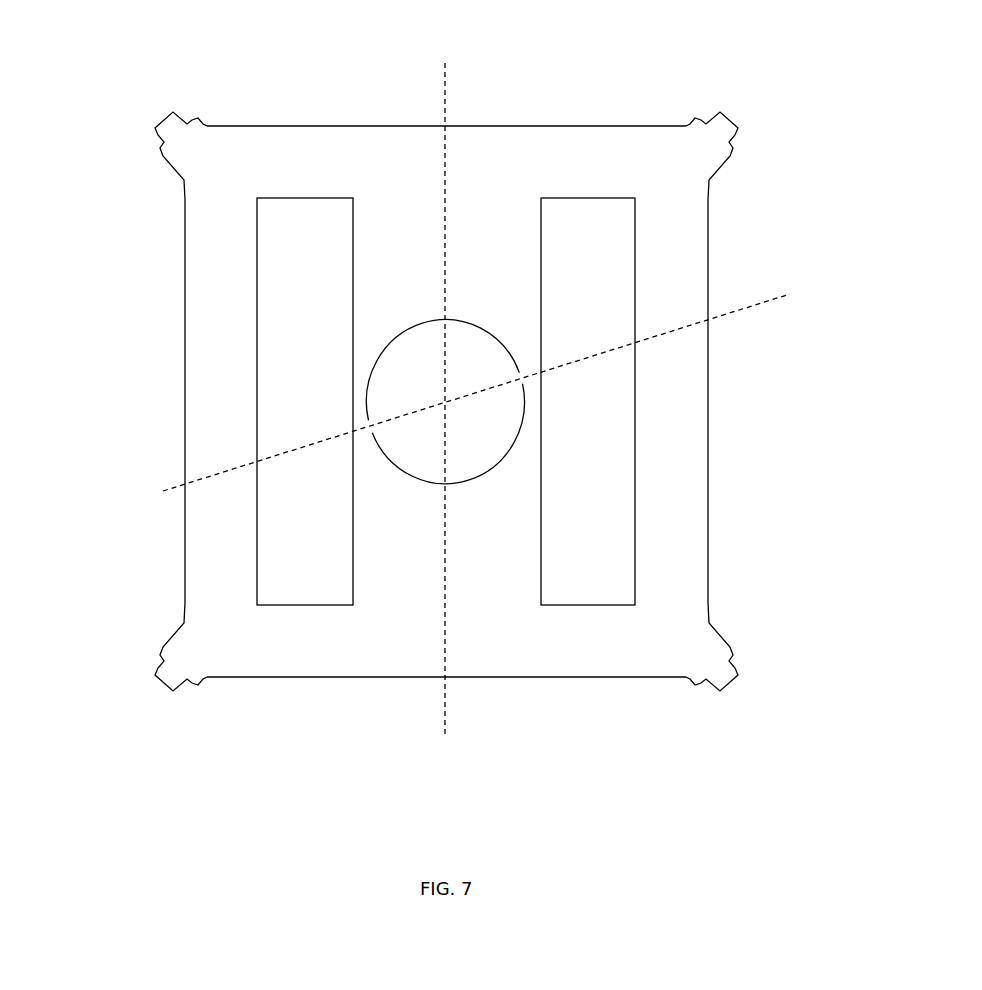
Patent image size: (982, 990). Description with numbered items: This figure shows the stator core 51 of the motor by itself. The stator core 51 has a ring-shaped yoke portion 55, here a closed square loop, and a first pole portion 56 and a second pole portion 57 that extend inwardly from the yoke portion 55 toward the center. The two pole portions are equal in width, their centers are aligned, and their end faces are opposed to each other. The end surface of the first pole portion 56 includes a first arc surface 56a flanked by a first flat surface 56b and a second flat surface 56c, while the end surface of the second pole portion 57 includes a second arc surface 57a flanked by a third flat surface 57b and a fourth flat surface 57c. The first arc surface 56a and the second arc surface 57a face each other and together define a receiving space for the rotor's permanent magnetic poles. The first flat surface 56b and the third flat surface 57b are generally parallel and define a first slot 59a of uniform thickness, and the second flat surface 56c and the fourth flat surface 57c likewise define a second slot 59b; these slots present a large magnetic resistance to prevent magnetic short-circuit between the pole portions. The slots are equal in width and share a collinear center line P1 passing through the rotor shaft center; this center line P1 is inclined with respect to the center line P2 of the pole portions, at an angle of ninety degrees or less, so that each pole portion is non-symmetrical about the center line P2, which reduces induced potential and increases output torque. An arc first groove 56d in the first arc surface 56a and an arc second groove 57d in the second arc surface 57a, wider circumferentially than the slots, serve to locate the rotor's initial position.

The stator core 51 is at (215, 73).
The yoke portion 55 is at (232, 343).
The first pole portion 56 is at (493, 298).
The first arc surface 56a is at (488, 338).
The first flat surface 56b is at (520, 372).
The second flat surface 56c is at (368, 420).
The first groove 56d is at (441, 320).
The second pole portion 57 is at (500, 508).
The second arc surface 57a is at (500, 453).
The third flat surface 57b is at (535, 385).
The fourth flat surface 57c is at (365, 443).
The second groove 57d is at (445, 485).
The first slot 59a is at (538, 372).
The second slot 59b is at (360, 433).
The center line of the first slot and the second slot P1 is at (743, 308).
The center line of the pole portions P2 is at (445, 711).